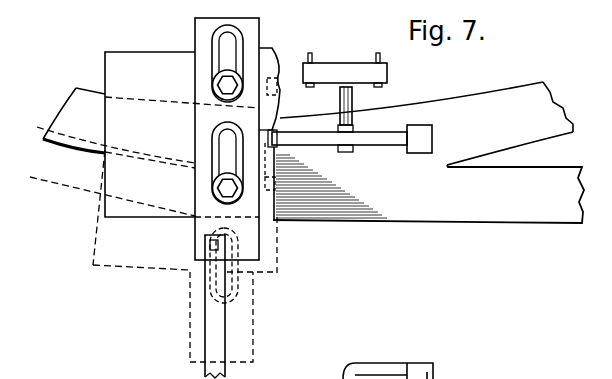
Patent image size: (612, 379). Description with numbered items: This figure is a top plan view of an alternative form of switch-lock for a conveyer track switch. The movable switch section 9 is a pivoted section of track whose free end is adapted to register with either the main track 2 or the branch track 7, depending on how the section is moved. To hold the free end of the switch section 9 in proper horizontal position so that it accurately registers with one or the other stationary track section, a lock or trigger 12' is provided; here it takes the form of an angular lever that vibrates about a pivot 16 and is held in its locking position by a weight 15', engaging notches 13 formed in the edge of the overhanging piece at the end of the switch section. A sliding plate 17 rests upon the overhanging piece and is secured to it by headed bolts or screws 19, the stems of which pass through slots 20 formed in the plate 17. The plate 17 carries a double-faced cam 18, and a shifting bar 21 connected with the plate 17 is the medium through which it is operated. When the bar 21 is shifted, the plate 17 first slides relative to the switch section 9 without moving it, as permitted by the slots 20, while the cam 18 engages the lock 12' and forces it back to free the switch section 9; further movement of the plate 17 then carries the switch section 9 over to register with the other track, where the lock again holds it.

The main track 2 is at (426, 123).
The branch track 7 is at (428, 189).
The movable switch section 9 is at (144, 179).
The vibrating lock or trigger 12' is at (337, 130).
The notches 13 is at (279, 124).
The weight 15' is at (440, 137).
The pivot 16 is at (347, 152).
The sliding plate 17 is at (203, 223).
The double-faced cam 18 is at (267, 68).
The headed bolts or screws 19 is at (213, 83).
The slots 20 is at (213, 47).
The shifting bar 21 is at (212, 365).